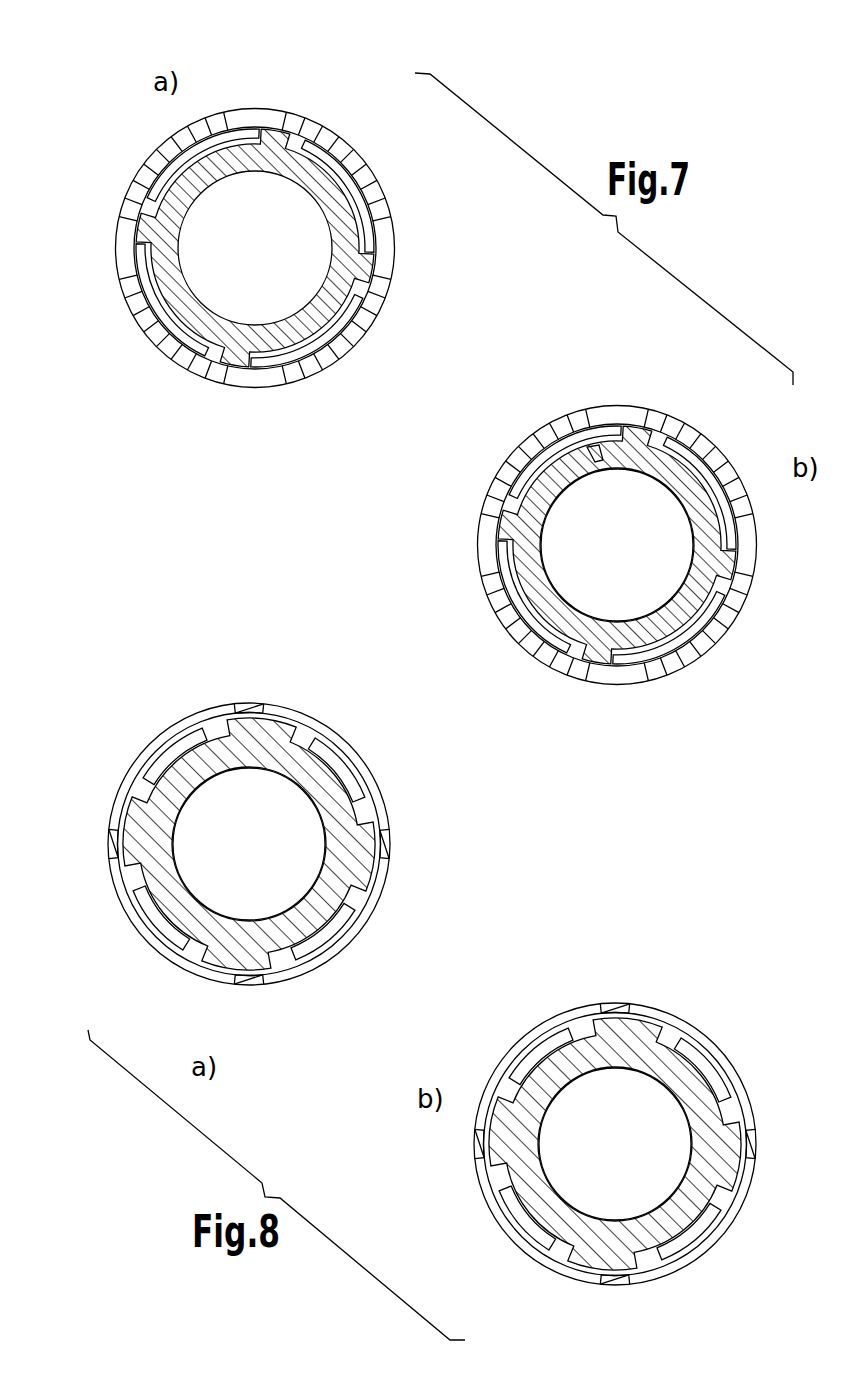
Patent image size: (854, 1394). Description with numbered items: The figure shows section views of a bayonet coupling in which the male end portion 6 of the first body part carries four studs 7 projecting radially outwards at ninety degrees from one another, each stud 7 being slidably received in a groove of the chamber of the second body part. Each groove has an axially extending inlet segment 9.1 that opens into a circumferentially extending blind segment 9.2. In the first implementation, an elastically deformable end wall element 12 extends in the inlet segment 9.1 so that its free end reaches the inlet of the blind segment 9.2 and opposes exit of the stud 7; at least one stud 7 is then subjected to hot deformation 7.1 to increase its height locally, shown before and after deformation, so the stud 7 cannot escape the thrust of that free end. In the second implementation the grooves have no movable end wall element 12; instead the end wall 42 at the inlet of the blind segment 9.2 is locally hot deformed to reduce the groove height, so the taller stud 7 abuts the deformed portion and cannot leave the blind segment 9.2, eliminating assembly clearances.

In FIG. 7, the second end portion 6 is at (700, 541).
In FIG. 8, the second end portion 6 is at (210, 764).
In FIG. 7, the stud 7 is at (267, 134).
In FIG. 8, the stud 7 is at (147, 746).
In FIG. 7, the hot deformation 7.1 is at (590, 462).
In FIG. 7, the inlet segment 9.1 is at (172, 297).
In FIG. 8, the inlet segment 9.1 is at (277, 729).
In FIG. 7, the blind segment 9.2 is at (231, 116).
In FIG. 8, the blind segment 9.2 is at (138, 774).
In FIG. 7, the end wall element 12 is at (337, 147).
In FIG. 8, the end wall 42 is at (243, 702).